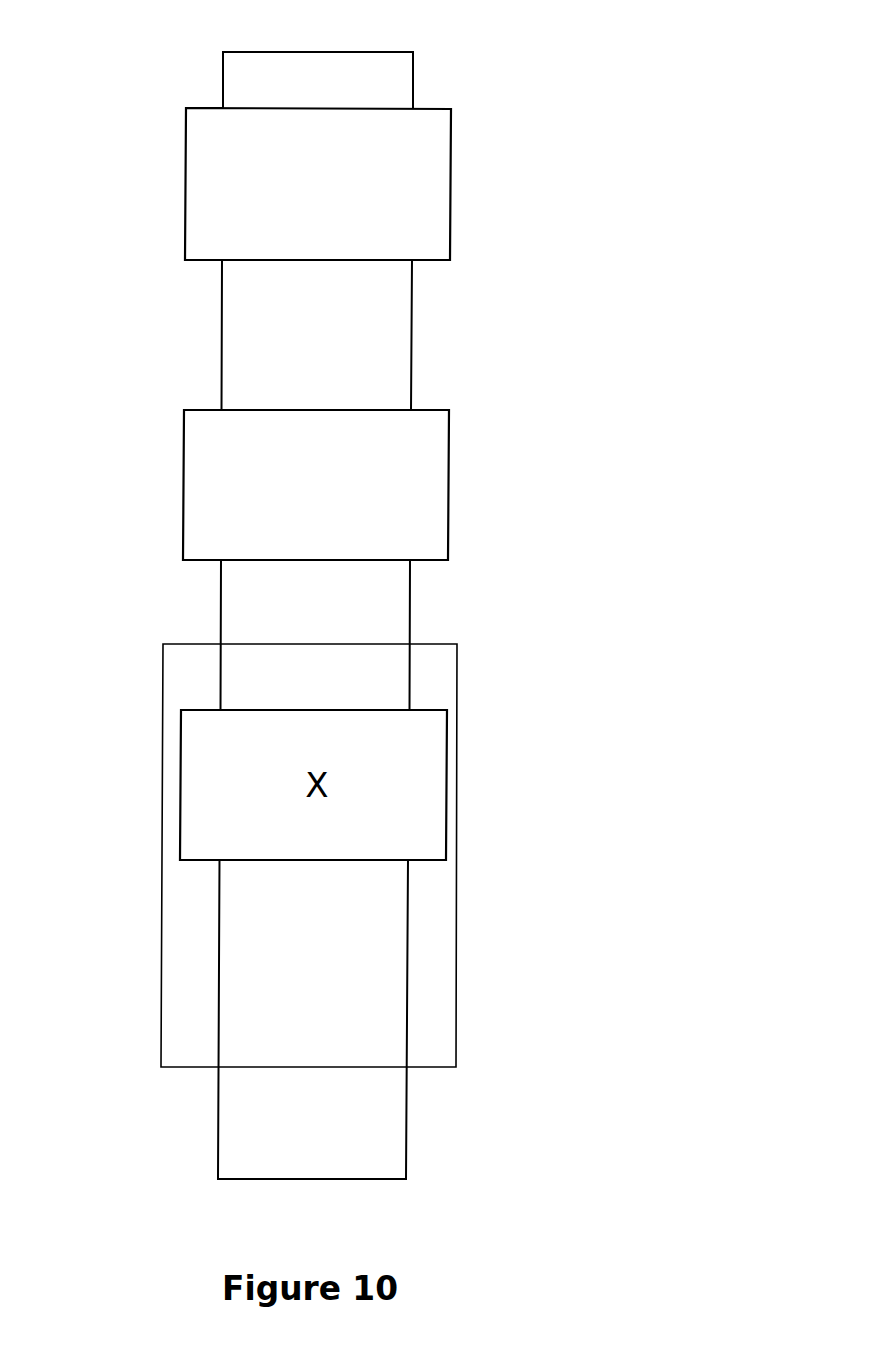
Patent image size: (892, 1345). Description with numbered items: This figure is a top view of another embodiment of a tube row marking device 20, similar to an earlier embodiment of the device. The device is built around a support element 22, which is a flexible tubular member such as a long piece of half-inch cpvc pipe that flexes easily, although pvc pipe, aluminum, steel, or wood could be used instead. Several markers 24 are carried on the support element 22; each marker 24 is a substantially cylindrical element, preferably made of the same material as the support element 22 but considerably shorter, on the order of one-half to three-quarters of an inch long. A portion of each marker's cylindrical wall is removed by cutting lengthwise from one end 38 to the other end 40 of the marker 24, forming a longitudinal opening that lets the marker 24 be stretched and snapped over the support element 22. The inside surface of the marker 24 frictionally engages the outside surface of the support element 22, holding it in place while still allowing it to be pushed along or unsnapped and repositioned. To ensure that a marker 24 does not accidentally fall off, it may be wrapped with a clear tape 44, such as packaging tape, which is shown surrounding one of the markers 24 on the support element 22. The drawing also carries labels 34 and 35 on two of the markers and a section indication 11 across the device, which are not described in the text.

The tube row marking device 20 is at (508, 287).
The support element 22 is at (413, 85).
The marker 24 is at (457, 153).
The memory cell region 34 is at (319, 185).
The memory cell region 35 is at (317, 486).
The one end 38 is at (203, 103).
The other end 40 is at (205, 262).
The clear tape 44 is at (457, 920).
The section line 11- 11 is at (184, 467).